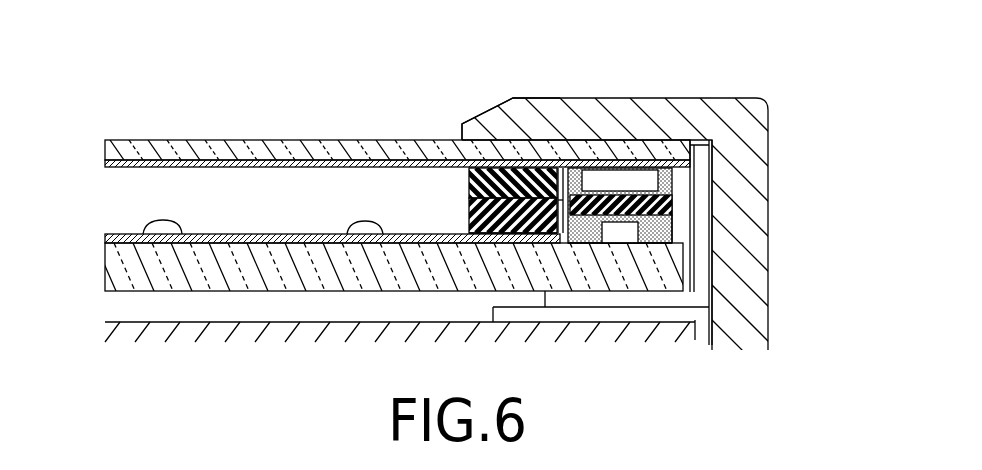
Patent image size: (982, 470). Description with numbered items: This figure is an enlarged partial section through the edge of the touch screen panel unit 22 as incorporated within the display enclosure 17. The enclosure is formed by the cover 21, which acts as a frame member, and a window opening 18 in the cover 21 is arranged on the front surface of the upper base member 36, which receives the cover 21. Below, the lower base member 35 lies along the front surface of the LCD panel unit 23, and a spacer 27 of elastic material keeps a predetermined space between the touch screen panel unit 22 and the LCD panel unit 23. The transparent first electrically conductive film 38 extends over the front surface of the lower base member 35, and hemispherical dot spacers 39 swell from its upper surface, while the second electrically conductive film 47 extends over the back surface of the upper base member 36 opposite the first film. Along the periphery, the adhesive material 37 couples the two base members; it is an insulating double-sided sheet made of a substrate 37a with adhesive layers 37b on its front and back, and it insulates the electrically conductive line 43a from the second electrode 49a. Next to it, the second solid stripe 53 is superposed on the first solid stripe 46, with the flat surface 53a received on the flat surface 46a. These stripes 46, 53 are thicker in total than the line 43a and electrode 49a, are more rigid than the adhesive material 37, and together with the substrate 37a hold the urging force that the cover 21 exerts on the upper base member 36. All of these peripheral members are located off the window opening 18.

The display enclosure 17 is at (596, 188).
The window opening 18 is at (460, 137).
The cover 21 is at (767, 99).
The touch screen panel unit 22 is at (374, 193).
The LCD panel unit 23 is at (726, 318).
The spacer 27 is at (713, 267).
The lower base member 35 is at (122, 291).
The upper base member 36 is at (123, 141).
The adhesive material 37 is at (674, 196).
The substrate 37a is at (560, 232).
The adhesive layers 37b is at (697, 138).
The first electrically conductive film 38 is at (123, 237).
The dot spacers 39 is at (177, 225).
The electrically conductive line 43a is at (672, 225).
The first solid stripe 46 is at (469, 218).
The flat surface 46a is at (479, 237).
The second electrically conductive film 47 is at (122, 164).
The second electrode 49a is at (673, 192).
The second solid stripe 53 is at (469, 188).
The flat surface 53a is at (559, 178).